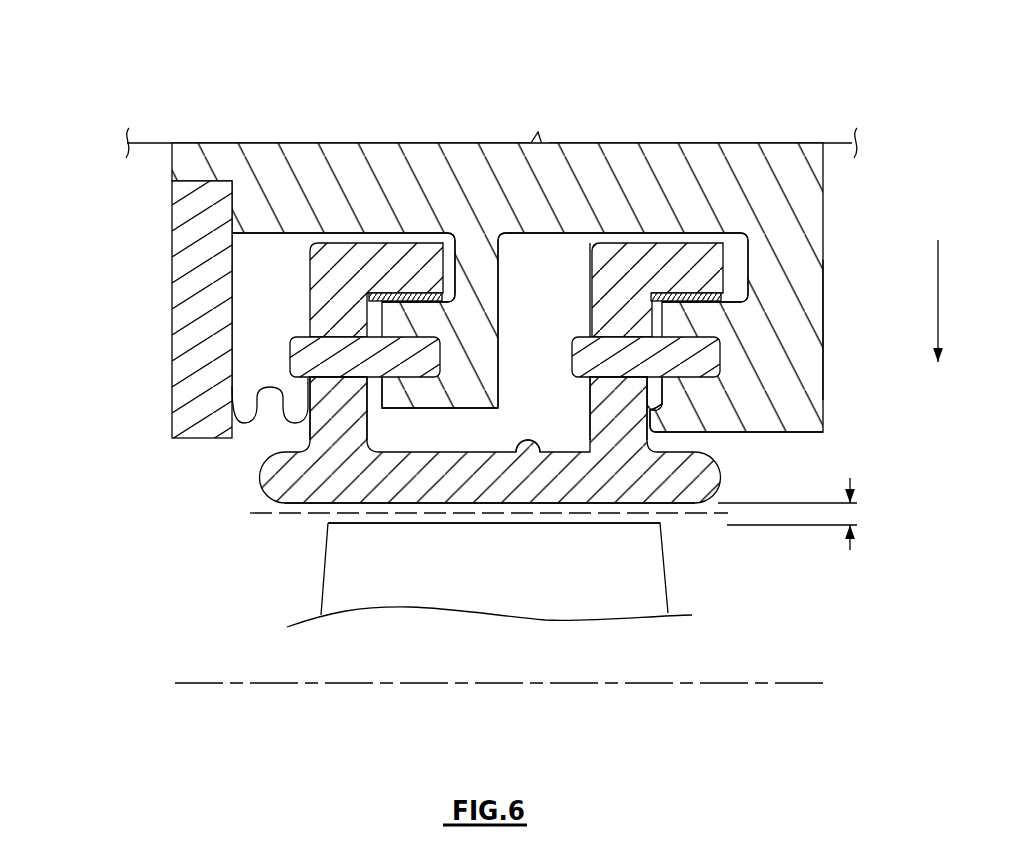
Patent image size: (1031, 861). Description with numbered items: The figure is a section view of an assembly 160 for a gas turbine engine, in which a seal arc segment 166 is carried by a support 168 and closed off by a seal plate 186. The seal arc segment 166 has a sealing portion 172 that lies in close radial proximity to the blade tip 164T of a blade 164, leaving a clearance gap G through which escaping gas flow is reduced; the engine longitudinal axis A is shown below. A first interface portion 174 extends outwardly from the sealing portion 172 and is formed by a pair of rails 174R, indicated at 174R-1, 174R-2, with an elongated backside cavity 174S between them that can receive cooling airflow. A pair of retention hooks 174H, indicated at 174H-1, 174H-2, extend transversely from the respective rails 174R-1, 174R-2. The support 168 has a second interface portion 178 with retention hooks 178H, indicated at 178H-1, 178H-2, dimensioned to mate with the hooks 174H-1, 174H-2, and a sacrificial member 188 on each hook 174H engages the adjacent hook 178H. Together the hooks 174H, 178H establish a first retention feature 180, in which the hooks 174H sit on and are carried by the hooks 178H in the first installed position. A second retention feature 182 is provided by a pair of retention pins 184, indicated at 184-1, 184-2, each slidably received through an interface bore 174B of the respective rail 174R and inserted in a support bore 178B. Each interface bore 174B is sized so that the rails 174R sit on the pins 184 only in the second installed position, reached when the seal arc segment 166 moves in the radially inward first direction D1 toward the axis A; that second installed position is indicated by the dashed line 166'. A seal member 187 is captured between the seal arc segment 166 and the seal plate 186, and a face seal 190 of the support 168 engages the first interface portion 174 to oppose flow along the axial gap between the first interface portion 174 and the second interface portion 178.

The assembly 160 is at (160, 84).
The blade 164 is at (668, 570).
The blade tip 164T is at (660, 523).
The seal arc segment 166 is at (447, 317).
The second installed position 166' is at (475, 553).
The support 168 is at (737, 143).
The sealing portion 172 is at (722, 478).
The first interface portion 174 is at (594, 266).
The interface bore 174B is at (336, 336).
The retention hook 174H is at (343, 187).
The retention hook 174H-1 is at (400, 233).
The retention hook 174H-2 is at (654, 243).
The rail 174R is at (168, 308).
The rail 174R-1 is at (308, 295).
The rail 174R-2 is at (587, 283).
The backside cavity 174S is at (530, 442).
The second interface portion 178 is at (824, 257).
The support bore 178B is at (403, 378).
The retention hook 178H is at (421, 469).
The retention hook 178H-1 is at (483, 377).
The retention hook 178H-2 is at (704, 421).
The first retention feature 180 is at (737, 213).
The second retention feature 182 is at (797, 327).
The retention pin 184 is at (247, 322).
The retention pin 184-1 is at (287, 332).
The retention pin 184-2 is at (577, 333).
The seal plate 186 is at (170, 332).
The seal member 187 is at (243, 430).
The sacrificial member 188 is at (400, 301).
The face seal 190 is at (650, 412).
The engine longitudinal axis A is at (815, 683).
The first direction D1 is at (937, 278).
The clearance gap G is at (852, 486).